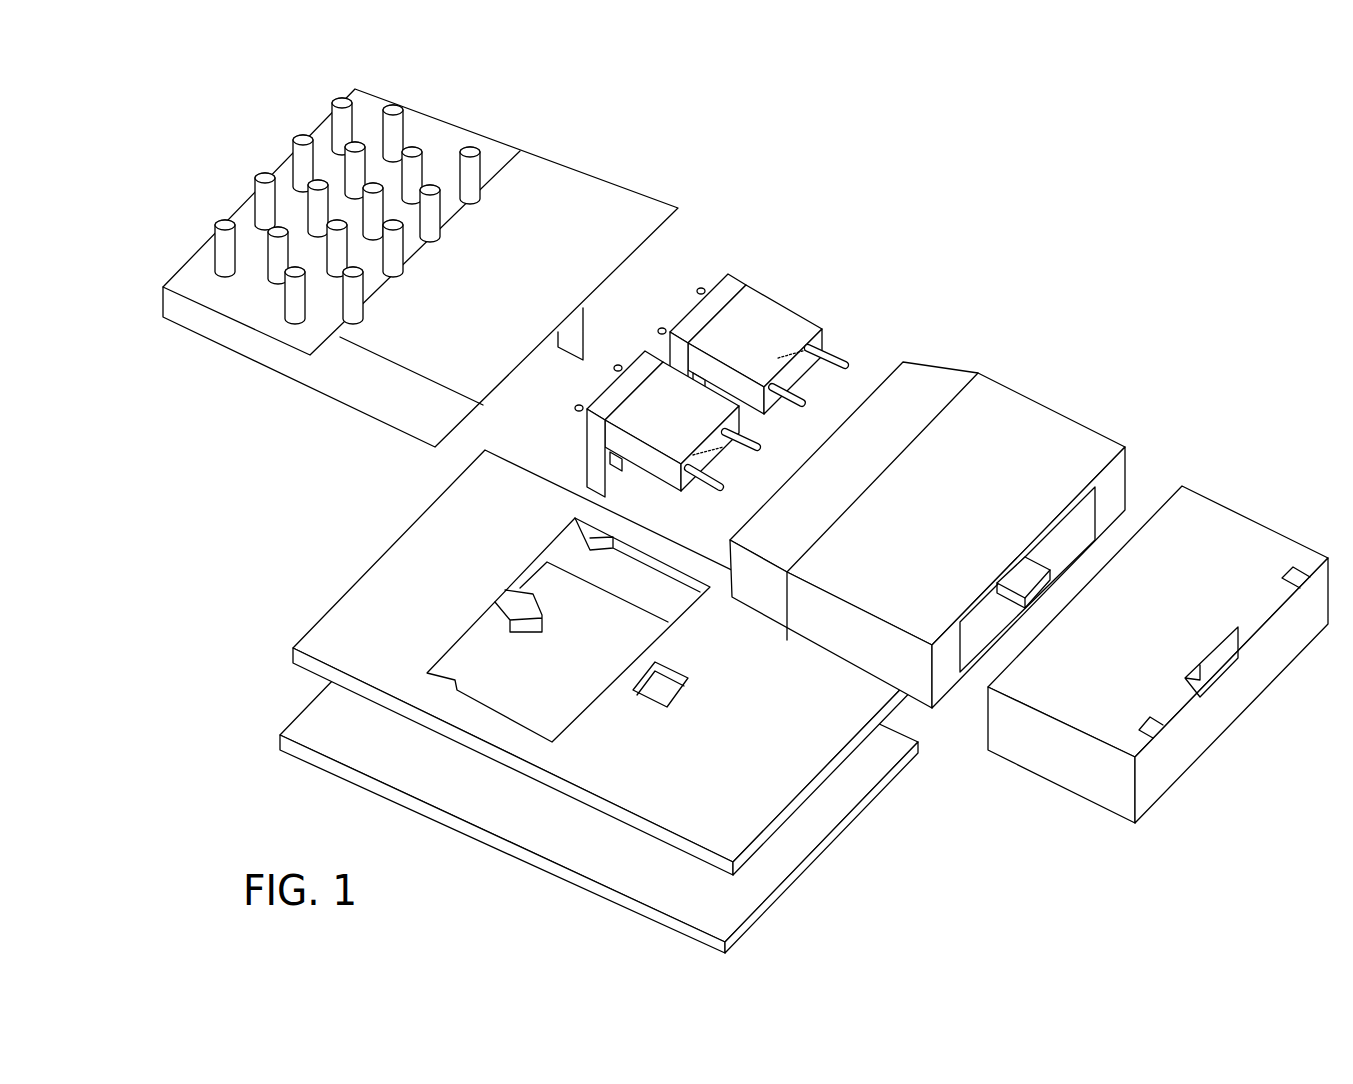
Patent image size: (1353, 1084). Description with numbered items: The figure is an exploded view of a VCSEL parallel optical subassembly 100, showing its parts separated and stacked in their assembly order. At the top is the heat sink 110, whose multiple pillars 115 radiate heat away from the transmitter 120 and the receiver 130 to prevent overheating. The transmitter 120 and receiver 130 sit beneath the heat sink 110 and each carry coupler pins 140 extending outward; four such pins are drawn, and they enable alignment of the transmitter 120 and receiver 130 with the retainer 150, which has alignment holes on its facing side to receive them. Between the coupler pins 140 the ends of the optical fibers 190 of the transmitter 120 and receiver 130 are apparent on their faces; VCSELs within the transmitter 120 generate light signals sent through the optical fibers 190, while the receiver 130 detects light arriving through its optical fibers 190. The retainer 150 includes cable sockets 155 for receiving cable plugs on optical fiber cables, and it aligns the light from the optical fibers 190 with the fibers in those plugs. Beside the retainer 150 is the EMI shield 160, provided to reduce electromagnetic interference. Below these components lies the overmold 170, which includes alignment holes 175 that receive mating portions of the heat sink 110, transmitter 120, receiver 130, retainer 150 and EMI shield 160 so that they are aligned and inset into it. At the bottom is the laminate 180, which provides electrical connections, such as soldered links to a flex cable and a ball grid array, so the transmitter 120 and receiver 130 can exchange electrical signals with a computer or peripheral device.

The VCSEL parallel optical subassembly 100 is at (740, 507).
The heat sink 110 is at (415, 254).
The pillars 115 is at (222, 215).
The transmitter 120 is at (790, 298).
The receiver 130 is at (653, 484).
The coupler pins 140 is at (834, 366).
The optical fibers 190 is at (797, 362).
The retainer 150 is at (953, 555).
The cable sockets 155 is at (1076, 523).
The EMI shield 160 is at (1173, 637).
The overmold 170 is at (609, 662).
The alignment holes 175 is at (615, 650).
The laminate 180 is at (718, 904).